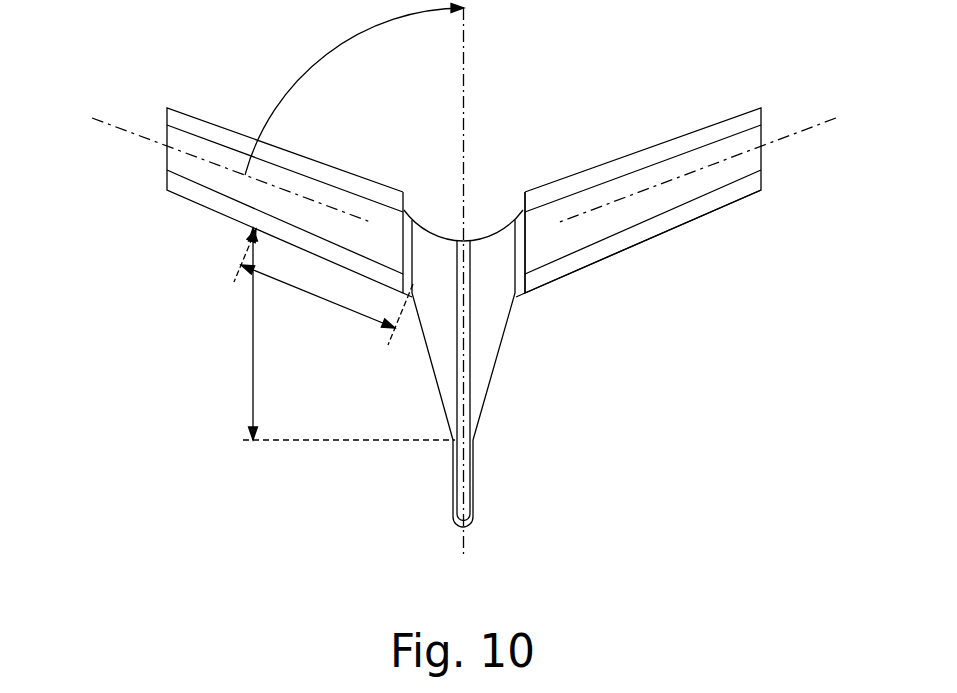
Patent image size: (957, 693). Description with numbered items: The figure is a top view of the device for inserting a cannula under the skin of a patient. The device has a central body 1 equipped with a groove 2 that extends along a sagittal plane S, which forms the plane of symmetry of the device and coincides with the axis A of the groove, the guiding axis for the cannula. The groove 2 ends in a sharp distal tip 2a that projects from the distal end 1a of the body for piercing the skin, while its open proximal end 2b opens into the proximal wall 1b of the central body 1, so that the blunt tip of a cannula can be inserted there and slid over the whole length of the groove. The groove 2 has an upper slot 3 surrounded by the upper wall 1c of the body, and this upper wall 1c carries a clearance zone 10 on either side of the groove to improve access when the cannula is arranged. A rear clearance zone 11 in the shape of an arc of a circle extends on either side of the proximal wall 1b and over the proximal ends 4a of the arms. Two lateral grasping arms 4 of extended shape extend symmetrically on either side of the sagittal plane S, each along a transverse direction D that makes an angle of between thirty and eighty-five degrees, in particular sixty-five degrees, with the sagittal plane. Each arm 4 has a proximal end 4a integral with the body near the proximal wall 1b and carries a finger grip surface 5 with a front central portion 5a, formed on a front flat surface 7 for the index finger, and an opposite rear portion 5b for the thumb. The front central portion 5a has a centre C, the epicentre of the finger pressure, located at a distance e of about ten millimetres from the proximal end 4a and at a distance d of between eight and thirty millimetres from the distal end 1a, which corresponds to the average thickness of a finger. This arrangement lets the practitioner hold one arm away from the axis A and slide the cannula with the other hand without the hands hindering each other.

The central body 1 is at (474, 315).
The distal end 1a is at (473, 441).
The proximal wall 1b is at (422, 227).
The upper wall 1c is at (490, 371).
The groove 2 is at (398, 497).
The sharp distal tip 2a is at (462, 526).
The open proximal end 2b is at (468, 238).
The upper slot 3 is at (468, 487).
The lateral grasping arm 4 is at (178, 165).
The proximal end 4a is at (525, 258).
The finger grip surface 5 is at (668, 174).
The front central portion 5a is at (673, 241).
The rear portion 5b is at (712, 124).
The front flat surface 7 is at (712, 212).
The clearance zone 10 is at (497, 334).
The rear clearance zone 11 is at (482, 162).
The transverse direction D is at (92, 118).
The centre C is at (241, 251).
The distance e is at (327, 305).
The distance d is at (346, 334).
The sagittal plane S is at (529, 302).
The axis A is at (465, 535).